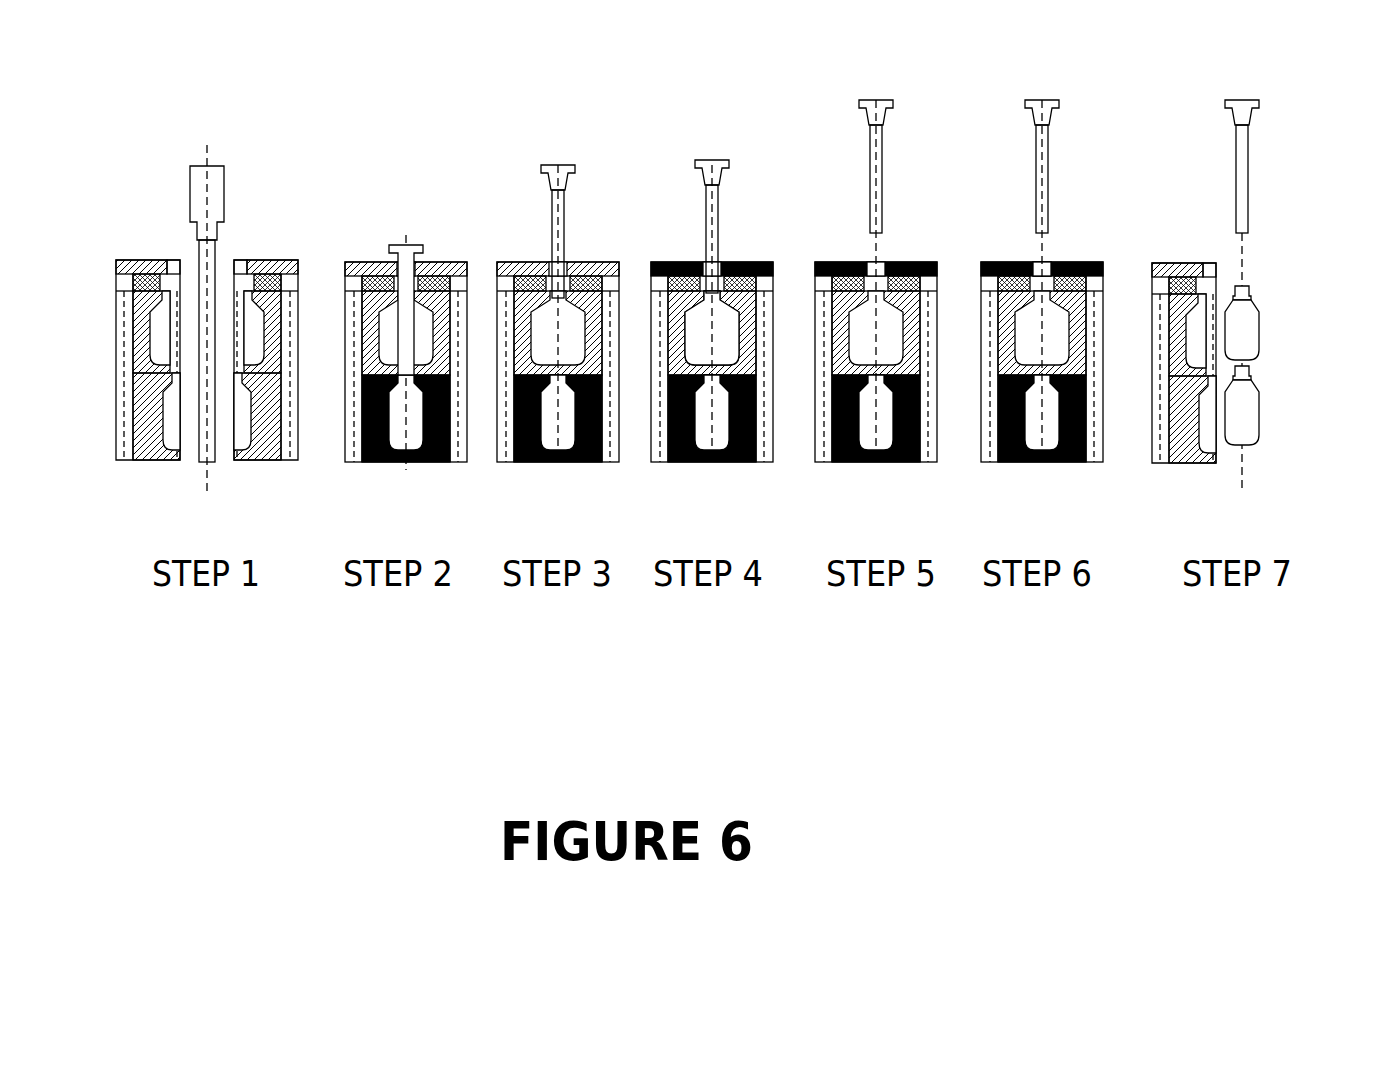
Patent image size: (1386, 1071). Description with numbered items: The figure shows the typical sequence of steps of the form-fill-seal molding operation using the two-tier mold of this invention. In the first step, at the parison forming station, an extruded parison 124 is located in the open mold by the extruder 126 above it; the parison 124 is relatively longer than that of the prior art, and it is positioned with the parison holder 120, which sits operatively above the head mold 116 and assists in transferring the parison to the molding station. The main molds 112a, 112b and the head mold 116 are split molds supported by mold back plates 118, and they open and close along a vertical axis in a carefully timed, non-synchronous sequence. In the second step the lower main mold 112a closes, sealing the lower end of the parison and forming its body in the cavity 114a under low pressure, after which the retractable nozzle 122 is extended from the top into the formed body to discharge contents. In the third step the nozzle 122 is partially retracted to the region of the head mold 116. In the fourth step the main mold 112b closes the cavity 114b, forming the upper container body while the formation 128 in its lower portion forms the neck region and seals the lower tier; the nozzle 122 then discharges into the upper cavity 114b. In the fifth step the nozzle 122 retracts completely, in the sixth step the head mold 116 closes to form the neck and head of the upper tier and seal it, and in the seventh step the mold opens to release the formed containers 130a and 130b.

The main mold 112a is at (143, 460).
The main mold 112b is at (133, 335).
The cavity 114a is at (396, 462).
The cavity 114b is at (390, 322).
The head mold 116 is at (1072, 285).
The mold back plate 118 is at (125, 417).
The parison holder 120 is at (362, 262).
The retractable nozzle 122 is at (572, 215).
The parison 124 is at (210, 338).
The core rod drive head 126 is at (215, 189).
The formation 128 is at (752, 373).
The formed container 130a is at (1247, 430).
The formed container 130b is at (1245, 320).